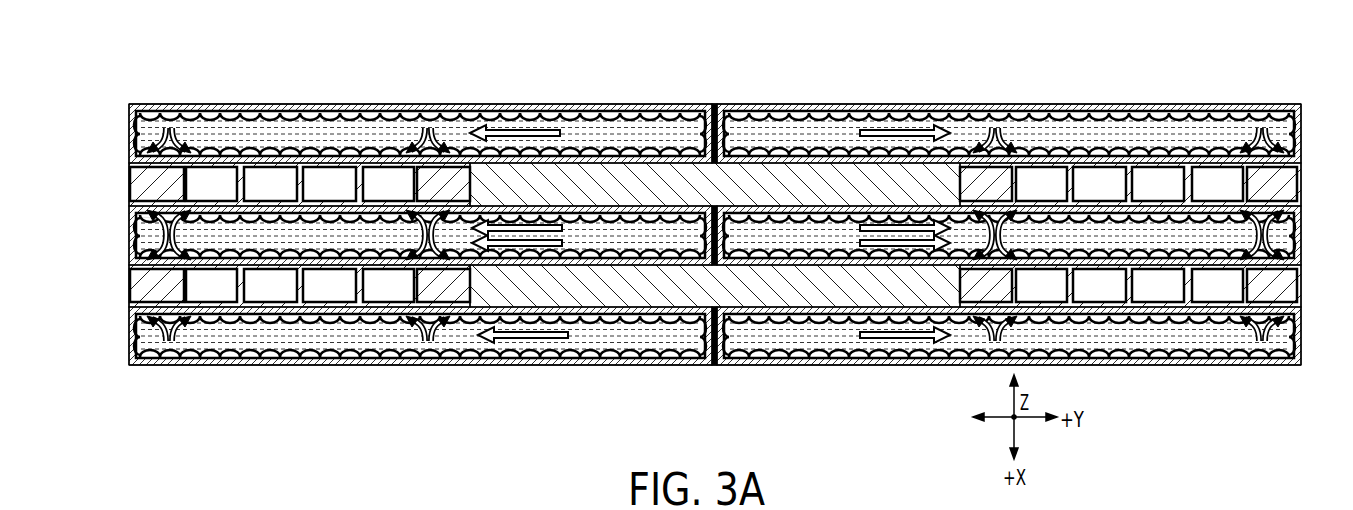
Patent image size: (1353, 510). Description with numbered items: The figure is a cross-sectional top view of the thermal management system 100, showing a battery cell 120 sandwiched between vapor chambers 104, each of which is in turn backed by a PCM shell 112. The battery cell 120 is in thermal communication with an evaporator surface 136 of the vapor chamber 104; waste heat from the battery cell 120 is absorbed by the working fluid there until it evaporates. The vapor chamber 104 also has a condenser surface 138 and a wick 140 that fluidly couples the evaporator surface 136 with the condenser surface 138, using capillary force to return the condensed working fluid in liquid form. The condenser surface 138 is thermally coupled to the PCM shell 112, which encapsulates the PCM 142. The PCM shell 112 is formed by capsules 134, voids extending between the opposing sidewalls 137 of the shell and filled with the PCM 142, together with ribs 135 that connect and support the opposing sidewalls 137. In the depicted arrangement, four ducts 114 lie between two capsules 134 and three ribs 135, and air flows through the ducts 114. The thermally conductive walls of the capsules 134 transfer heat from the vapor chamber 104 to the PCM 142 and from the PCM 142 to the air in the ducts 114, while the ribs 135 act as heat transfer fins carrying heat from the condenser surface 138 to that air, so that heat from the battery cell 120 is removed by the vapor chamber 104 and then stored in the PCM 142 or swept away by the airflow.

The thermal management system 100 is at (100, 101).
The vapor chamber 104 is at (1213, 106).
The PCM shell 112 is at (116, 276).
The duct 114 is at (193, 303).
The battery cell 120 is at (689, 170).
The capsule 134 is at (143, 297).
The rib 135 is at (243, 292).
The evaporator surface 136 is at (592, 160).
The opposing sidewall 137 is at (265, 263).
The condenser surface 138 is at (290, 158).
The wick 140 is at (334, 110).
The PCM 142 is at (136, 284).